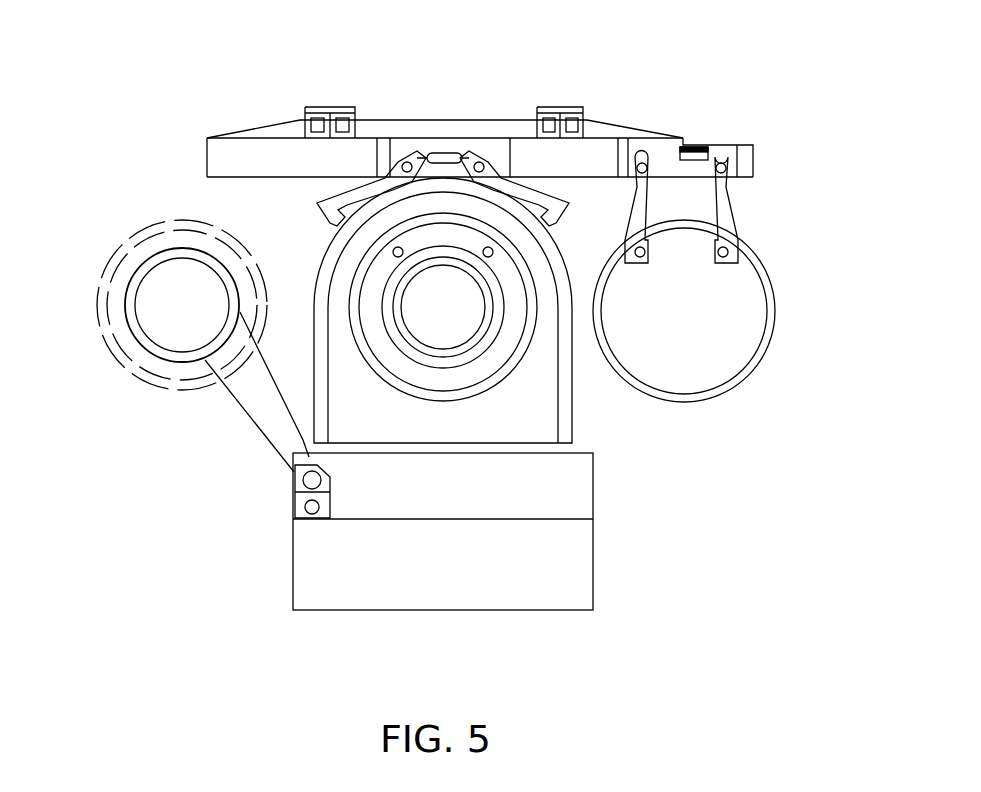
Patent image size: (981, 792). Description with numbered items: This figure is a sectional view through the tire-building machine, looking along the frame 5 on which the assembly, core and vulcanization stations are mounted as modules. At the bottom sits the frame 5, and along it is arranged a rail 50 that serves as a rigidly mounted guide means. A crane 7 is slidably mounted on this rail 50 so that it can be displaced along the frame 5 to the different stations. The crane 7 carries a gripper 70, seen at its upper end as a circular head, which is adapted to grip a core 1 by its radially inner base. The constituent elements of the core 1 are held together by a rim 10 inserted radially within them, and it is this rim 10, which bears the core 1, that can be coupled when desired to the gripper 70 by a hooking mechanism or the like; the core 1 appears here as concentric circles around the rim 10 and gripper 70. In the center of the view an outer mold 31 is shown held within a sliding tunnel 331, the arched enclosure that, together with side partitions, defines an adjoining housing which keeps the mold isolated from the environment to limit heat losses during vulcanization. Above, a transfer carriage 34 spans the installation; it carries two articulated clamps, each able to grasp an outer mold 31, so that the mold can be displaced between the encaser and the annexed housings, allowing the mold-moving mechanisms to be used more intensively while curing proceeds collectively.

The core 1 is at (132, 378).
The frame 5 is at (580, 560).
The crane 7 is at (268, 425).
The rim 10 is at (128, 295).
The outer mold 31 is at (517, 355).
The transfer carriage 34 is at (428, 93).
The rail 50 is at (302, 500).
The gripper 70 is at (167, 275).
The sliding tunnel 331 is at (560, 417).